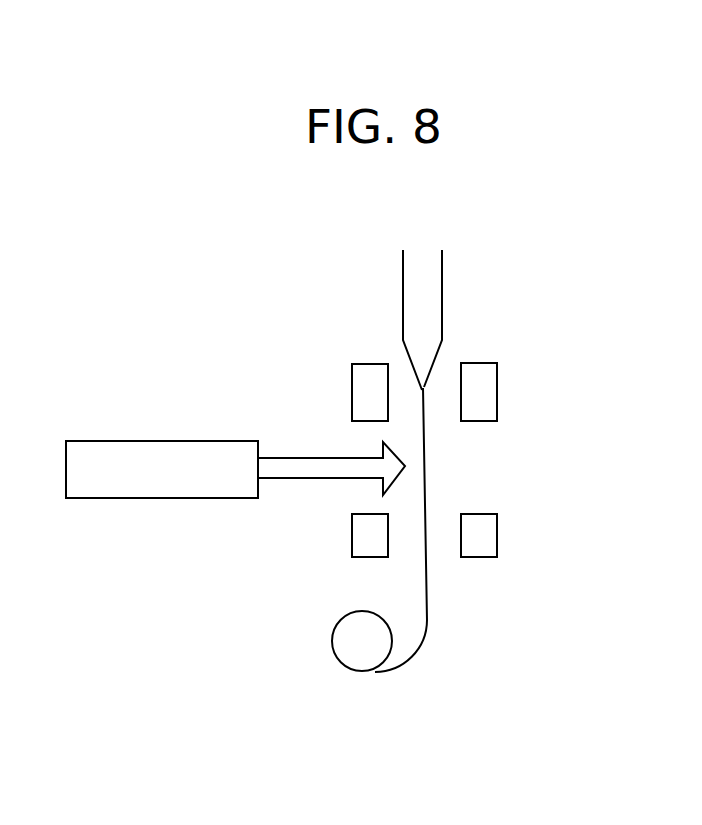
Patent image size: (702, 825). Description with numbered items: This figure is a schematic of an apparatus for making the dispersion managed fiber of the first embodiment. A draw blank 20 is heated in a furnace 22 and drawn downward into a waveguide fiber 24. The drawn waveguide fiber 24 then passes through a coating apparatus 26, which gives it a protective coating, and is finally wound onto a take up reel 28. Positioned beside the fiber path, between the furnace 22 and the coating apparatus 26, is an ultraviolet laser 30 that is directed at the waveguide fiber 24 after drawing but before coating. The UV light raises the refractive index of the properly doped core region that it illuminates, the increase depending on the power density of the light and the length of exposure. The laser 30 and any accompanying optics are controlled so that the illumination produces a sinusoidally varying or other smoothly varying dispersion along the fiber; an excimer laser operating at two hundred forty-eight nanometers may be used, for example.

The draw blank 20 is at (433, 272).
The furnace 22 is at (492, 377).
The waveguide fiber 24 is at (424, 465).
The coating apparatus 26 is at (483, 530).
The take up reel 28 is at (340, 638).
The ultraviolet (UV) laser 30 is at (188, 440).